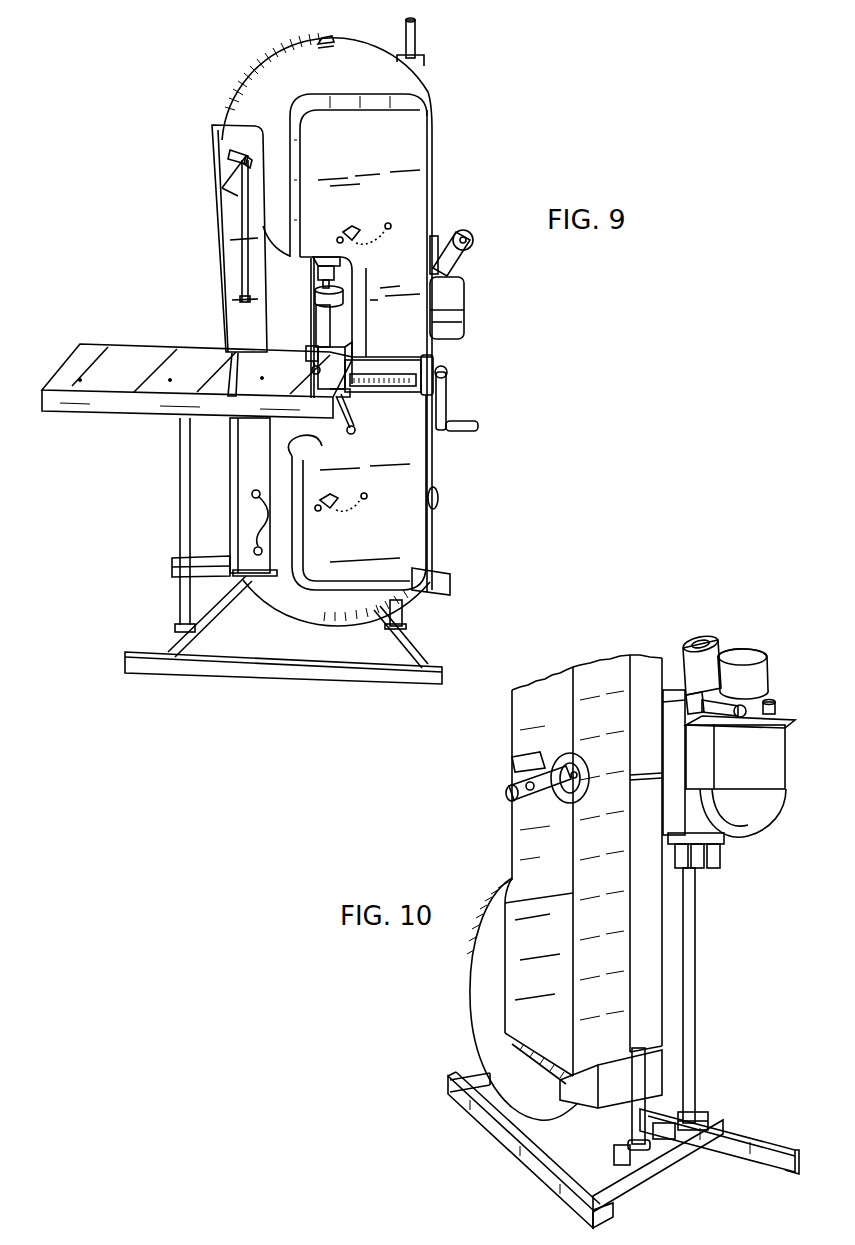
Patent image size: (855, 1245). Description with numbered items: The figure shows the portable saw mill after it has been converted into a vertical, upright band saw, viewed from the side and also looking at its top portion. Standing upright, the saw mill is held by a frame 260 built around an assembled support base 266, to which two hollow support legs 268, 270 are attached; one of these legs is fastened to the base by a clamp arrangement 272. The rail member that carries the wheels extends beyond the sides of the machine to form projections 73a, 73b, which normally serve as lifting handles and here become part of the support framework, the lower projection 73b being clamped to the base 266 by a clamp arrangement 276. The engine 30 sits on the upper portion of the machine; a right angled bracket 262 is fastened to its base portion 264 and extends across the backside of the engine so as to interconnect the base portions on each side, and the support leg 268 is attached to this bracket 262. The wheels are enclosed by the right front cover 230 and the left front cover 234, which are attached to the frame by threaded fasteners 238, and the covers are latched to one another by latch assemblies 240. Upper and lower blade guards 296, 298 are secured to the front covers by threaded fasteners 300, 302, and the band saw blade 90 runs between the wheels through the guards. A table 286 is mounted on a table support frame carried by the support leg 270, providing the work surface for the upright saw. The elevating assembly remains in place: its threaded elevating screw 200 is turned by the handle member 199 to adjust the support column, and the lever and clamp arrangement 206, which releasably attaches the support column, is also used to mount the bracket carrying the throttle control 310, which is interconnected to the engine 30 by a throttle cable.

In FIG. 9, the engine 30 is at (474, 312).
In FIG. 10, the engine 30 is at (765, 642).
In FIG. 9, the projection 73a is at (416, 44).
In FIG. 9, the projection 73b is at (403, 619).
In FIG. 10, the projection 73b is at (660, 1140).
In FIG. 9, the saw blade 90 is at (362, 294).
In FIG. 9, the handle member 199 is at (478, 428).
In FIG. 10, the handle member 199 is at (518, 794).
In FIG. 9, the threaded elevating screw 200 is at (448, 394).
In FIG. 10, the threaded elevating screw 200 is at (520, 762).
In FIG. 9, the lever and clamp arrangement 206 is at (355, 421).
In FIG. 9, the right front cover 230 is at (412, 141).
In FIG. 9, the left front cover 234 is at (403, 556).
In FIG. 10, the left front cover 234 is at (482, 993).
In FIG. 9, the threaded fasteners 238 is at (378, 213).
In FIG. 9, the latch assemblies 240 is at (330, 38).
In FIG. 9, the frame 260 is at (386, 708).
In FIG. 10, the frame 260 is at (538, 1183).
In FIG. 10, the right angled bracket 262 is at (716, 864).
In FIG. 10, the base portion 264 is at (730, 836).
In FIG. 9, the support base 266 is at (305, 680).
In FIG. 10, the support base 266 is at (500, 1136).
In FIG. 10, the support leg 268 is at (698, 968).
In FIG. 9, the support leg 270 is at (190, 515).
In FIG. 10, the clamp arrangement 272 is at (700, 1122).
In FIG. 10, the clamp arrangement 276 is at (624, 1168).
In FIG. 9, the table 286 is at (182, 356).
In FIG. 9, the upper blade guard 296 is at (224, 270).
In FIG. 9, the lower blade guard 298 is at (238, 461).
In FIG. 9, the threaded fasteners 300 is at (230, 180).
In FIG. 9, the threaded fasteners 302 is at (272, 528).
In FIG. 9, the throttle control 310 is at (319, 345).